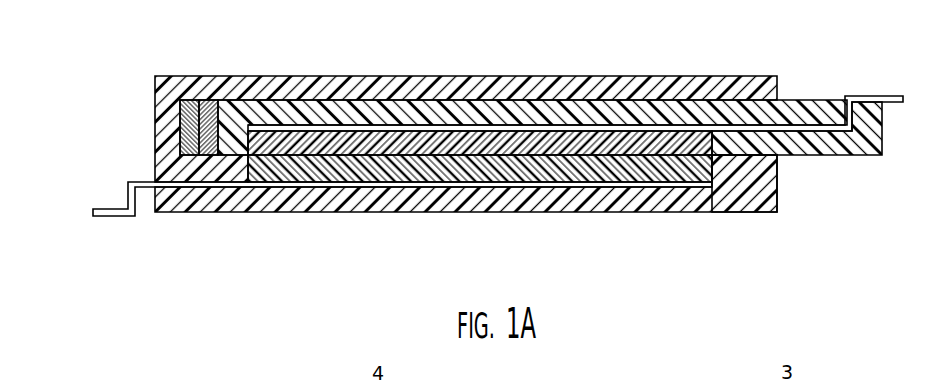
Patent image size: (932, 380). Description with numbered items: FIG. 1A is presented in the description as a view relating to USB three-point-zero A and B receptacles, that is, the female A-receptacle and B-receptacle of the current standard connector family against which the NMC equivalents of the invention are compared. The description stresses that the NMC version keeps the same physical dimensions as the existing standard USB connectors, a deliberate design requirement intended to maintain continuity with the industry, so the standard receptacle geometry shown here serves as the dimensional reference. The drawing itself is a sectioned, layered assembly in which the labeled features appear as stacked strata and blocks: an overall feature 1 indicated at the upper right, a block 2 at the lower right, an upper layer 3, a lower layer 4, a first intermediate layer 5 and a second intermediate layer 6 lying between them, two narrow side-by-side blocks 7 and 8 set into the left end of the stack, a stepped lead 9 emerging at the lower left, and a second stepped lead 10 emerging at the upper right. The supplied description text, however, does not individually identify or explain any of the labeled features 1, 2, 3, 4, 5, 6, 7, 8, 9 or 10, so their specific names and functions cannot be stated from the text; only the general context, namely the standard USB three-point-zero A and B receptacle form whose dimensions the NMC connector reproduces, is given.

The sensor device 1 is at (820, 98).
The housing block 2 is at (755, 214).
The upper cover layer 3 is at (606, 113).
The lower cover layer 4 is at (531, 194).
The first functional layer 5 is at (327, 130).
The second functional layer 6 is at (357, 179).
The second element 7 is at (209, 99).
The first element 8 is at (189, 99).
The first lead 9 is at (117, 219).
The second lead 10 is at (887, 94).